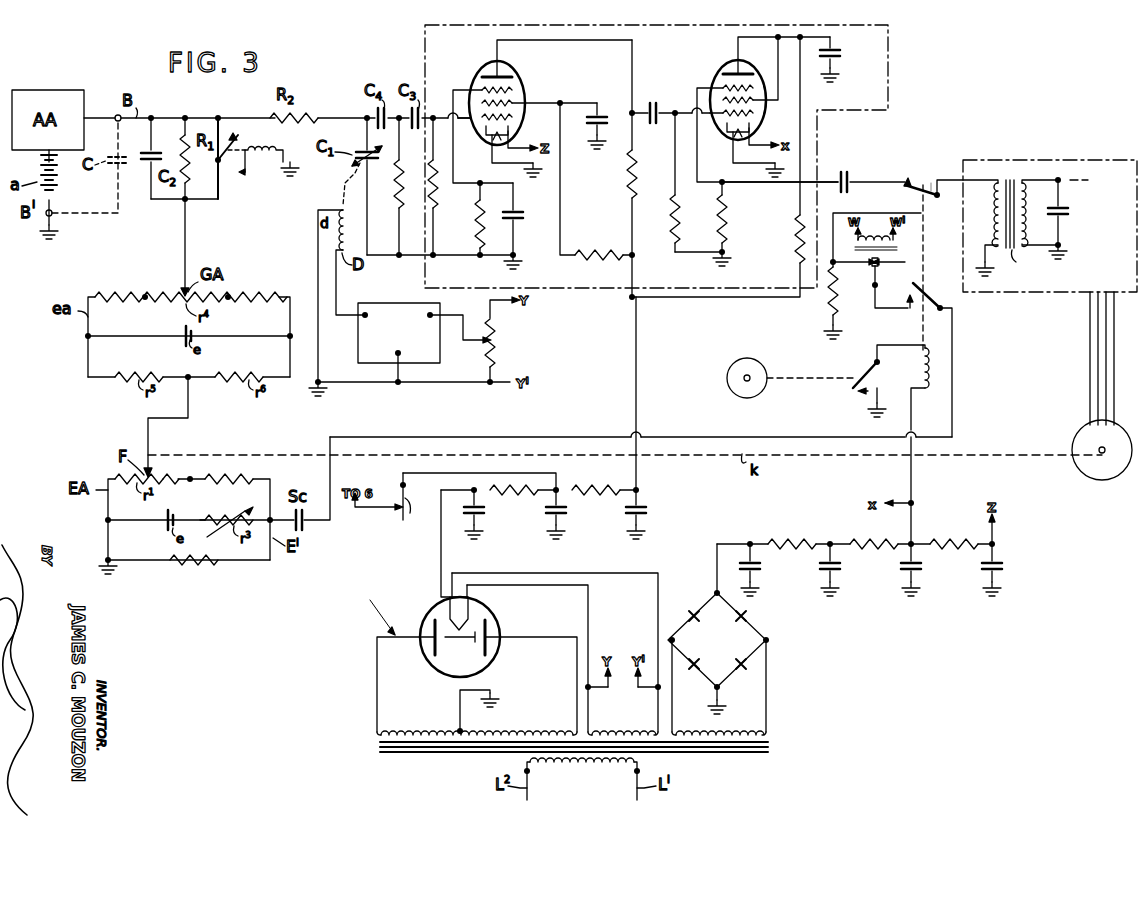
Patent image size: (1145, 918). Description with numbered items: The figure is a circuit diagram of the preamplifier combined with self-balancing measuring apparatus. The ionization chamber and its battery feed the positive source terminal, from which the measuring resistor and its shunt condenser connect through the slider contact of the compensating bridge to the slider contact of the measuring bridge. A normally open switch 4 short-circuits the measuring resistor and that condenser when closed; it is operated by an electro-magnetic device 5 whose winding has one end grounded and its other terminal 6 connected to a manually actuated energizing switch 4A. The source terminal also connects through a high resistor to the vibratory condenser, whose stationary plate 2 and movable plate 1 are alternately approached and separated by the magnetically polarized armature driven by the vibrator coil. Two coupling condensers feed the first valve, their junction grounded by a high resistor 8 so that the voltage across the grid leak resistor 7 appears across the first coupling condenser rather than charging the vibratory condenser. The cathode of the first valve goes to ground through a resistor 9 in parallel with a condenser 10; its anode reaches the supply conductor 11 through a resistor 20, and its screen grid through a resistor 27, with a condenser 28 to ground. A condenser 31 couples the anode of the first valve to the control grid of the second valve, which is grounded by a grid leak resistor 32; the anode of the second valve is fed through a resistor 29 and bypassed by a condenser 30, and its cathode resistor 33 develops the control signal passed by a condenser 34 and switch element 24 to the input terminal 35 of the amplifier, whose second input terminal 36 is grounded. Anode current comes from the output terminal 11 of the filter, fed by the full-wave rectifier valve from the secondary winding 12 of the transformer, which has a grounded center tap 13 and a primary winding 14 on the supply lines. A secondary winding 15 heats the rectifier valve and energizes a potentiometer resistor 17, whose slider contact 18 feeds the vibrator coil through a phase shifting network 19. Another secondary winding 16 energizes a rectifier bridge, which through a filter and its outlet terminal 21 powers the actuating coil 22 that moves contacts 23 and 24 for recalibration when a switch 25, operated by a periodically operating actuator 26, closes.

The movable plate 1 is at (368, 166).
The stationary plate 2 is at (372, 150).
The normally open switch 4 is at (226, 158).
The manually actuated energizing switch 4A is at (417, 504).
The electro-magnetic device 5 is at (270, 150).
The winding terminal 6 is at (249, 175).
The grid leak resistor 7 is at (430, 184).
The resistor 8 is at (396, 191).
The resistor 9 is at (476, 217).
The condenser 10 is at (523, 215).
The output terminal 11 is at (636, 376).
The secondary winding 12 is at (431, 726).
The center tap 13 is at (486, 688).
The primary winding 14 is at (595, 772).
The secondary winding 15 is at (644, 728).
The secondary winding 16 is at (714, 726).
The potentiometer resistor 17 is at (494, 342).
The slider contact 18 is at (480, 348).
The phase shifting network 19 is at (380, 336).
The resistor 20 is at (626, 178).
The outlet terminal 21 is at (914, 476).
The actuating coil 22 is at (920, 375).
The movable contact 23 is at (935, 295).
The movable contact 24 is at (913, 178).
The switch 25 is at (866, 364).
The periodically operating actuator 26 is at (746, 366).
The resistor 27 is at (610, 260).
The condenser 28 is at (612, 114).
The resistor 29 is at (796, 226).
The condenser 30 is at (840, 50).
The condenser 31 is at (657, 100).
The grid leak resistor 32 is at (672, 212).
The resistor 33 is at (720, 212).
The condenser 34 is at (846, 168).
The input terminal 35 is at (948, 193).
The input terminal 36 is at (983, 235).